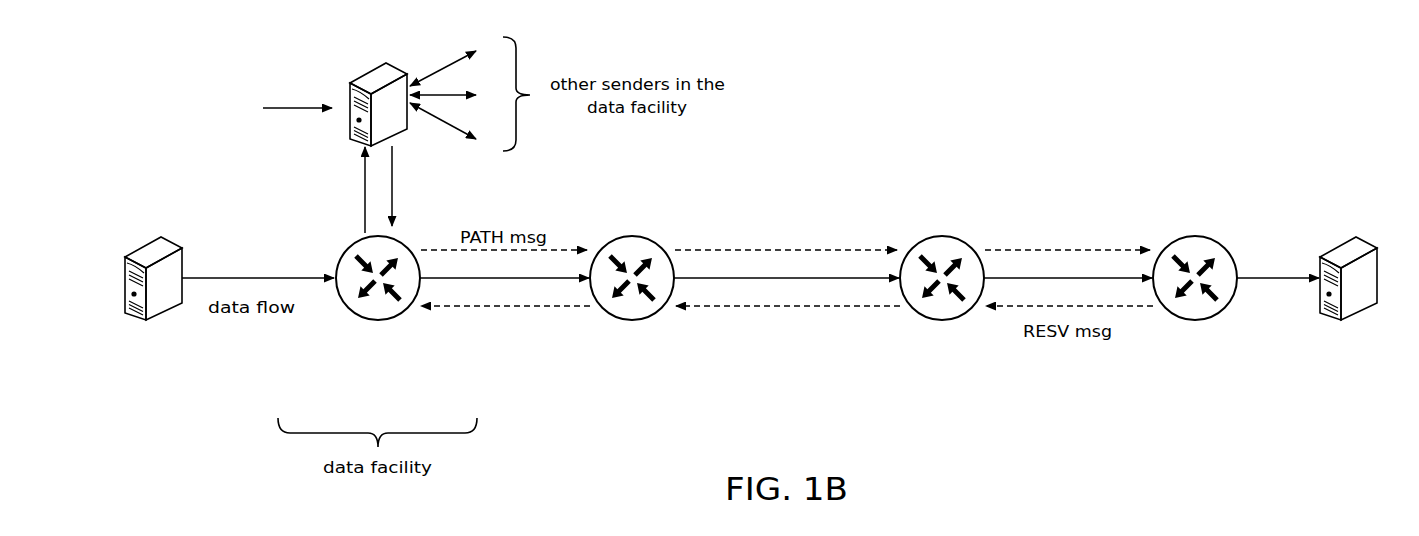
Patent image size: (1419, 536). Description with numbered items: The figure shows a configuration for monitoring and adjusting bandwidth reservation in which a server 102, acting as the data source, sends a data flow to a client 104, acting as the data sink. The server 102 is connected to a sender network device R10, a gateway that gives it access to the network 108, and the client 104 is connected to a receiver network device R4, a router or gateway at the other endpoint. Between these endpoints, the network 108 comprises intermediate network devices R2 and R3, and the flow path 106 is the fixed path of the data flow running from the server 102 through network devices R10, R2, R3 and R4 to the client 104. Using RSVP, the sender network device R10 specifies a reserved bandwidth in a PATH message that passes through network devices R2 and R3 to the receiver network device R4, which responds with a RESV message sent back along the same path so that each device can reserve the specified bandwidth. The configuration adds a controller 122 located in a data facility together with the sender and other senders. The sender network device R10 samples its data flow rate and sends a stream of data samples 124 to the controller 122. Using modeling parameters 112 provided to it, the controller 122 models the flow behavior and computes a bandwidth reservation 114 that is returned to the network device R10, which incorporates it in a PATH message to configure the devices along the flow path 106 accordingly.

The server 102 is at (152, 322).
The client 104 is at (1348, 237).
The flow path 106 is at (840, 274).
The network 108 is at (787, 297).
The modeling parameters 112 is at (202, 111).
The bandwidth reservation 114 is at (437, 186).
The controller 122 is at (370, 76).
The data samples 124 is at (299, 190).
The sender network device R10 is at (378, 321).
The network device R2 is at (632, 321).
The network device R3 is at (942, 321).
The network device R4 is at (1195, 321).